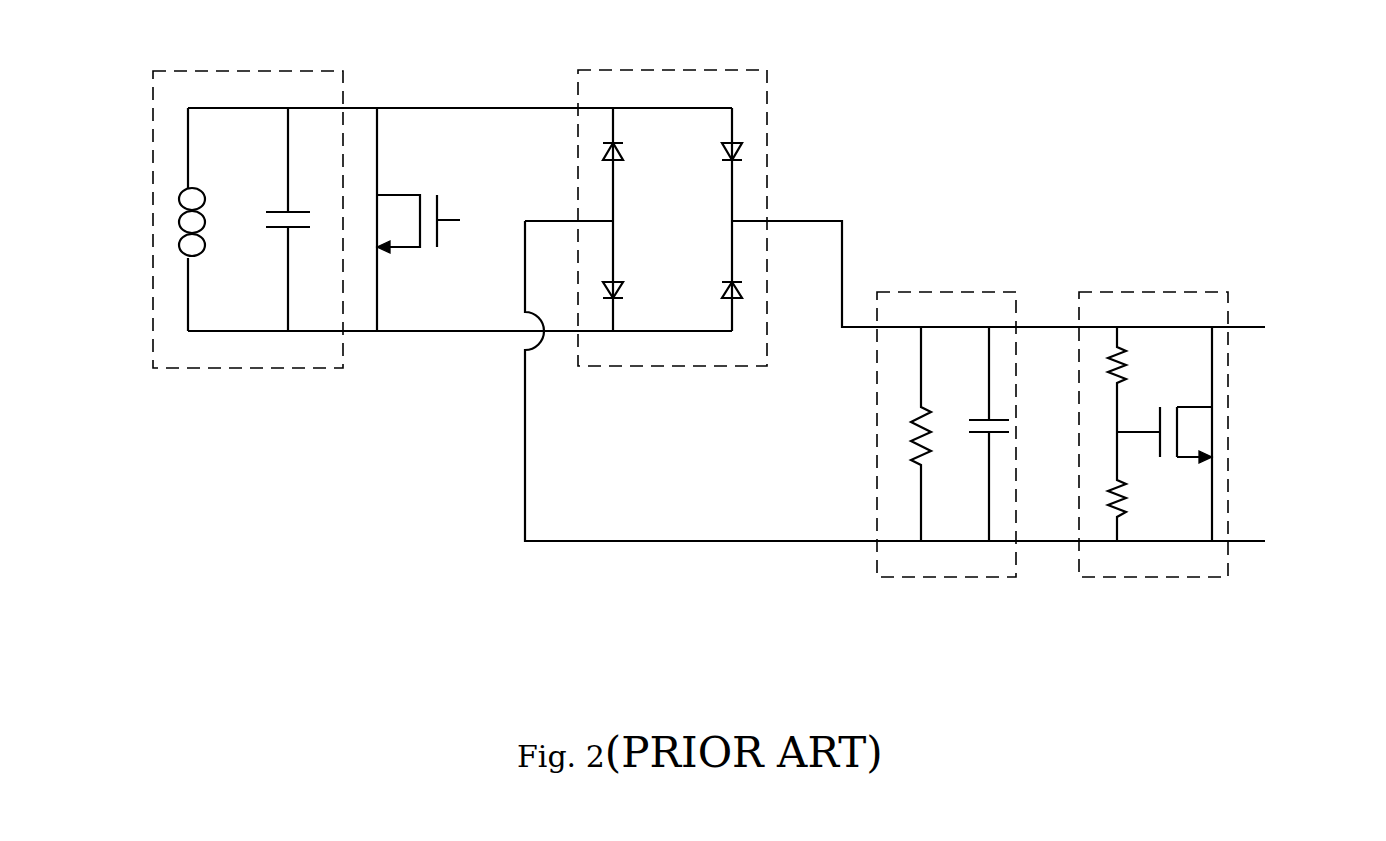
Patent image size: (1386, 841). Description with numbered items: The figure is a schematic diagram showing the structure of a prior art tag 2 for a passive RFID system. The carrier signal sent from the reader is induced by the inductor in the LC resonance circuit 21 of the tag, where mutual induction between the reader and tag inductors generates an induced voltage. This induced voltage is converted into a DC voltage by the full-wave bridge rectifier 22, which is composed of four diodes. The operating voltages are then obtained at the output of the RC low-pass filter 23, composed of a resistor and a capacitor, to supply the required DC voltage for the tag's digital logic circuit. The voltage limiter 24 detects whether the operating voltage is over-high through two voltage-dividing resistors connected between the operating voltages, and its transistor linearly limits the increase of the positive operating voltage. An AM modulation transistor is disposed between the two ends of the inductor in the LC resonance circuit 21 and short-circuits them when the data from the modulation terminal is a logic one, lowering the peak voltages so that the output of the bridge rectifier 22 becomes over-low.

The tag for the passive RFID system 2 is at (1107, 92).
The LC resonance circuit 21 is at (282, 93).
The full-wave bridge rectifier 22 is at (657, 85).
The RC low-pass filter 23 is at (937, 305).
The voltage limiter 24 is at (1128, 305).